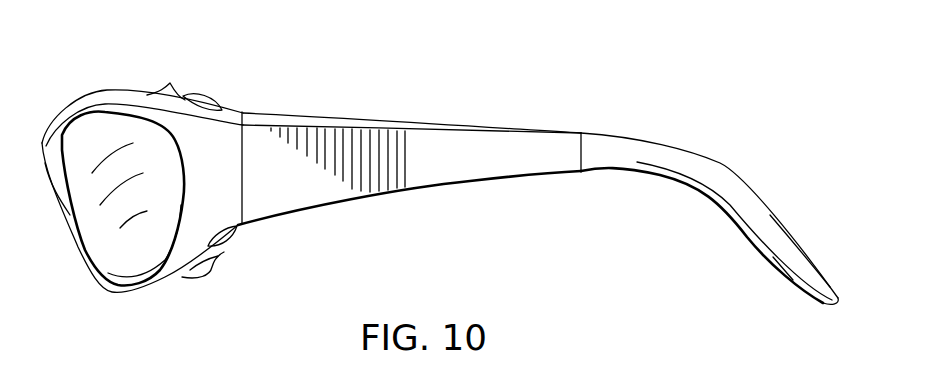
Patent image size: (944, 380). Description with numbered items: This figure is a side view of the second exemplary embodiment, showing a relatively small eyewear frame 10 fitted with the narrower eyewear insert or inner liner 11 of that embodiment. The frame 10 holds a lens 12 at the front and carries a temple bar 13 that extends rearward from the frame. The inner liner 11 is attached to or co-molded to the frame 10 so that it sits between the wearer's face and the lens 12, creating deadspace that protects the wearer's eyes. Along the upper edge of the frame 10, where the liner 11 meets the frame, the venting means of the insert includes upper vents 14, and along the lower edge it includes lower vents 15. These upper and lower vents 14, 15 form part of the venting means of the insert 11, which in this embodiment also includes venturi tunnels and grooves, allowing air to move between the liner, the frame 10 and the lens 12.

The eyewear frame 10 is at (112, 293).
The inner liner 11 is at (200, 95).
The lens 12 is at (93, 240).
The temple bar 13 is at (697, 150).
The upper vents 14 is at (170, 83).
The lower vents 15 is at (212, 267).